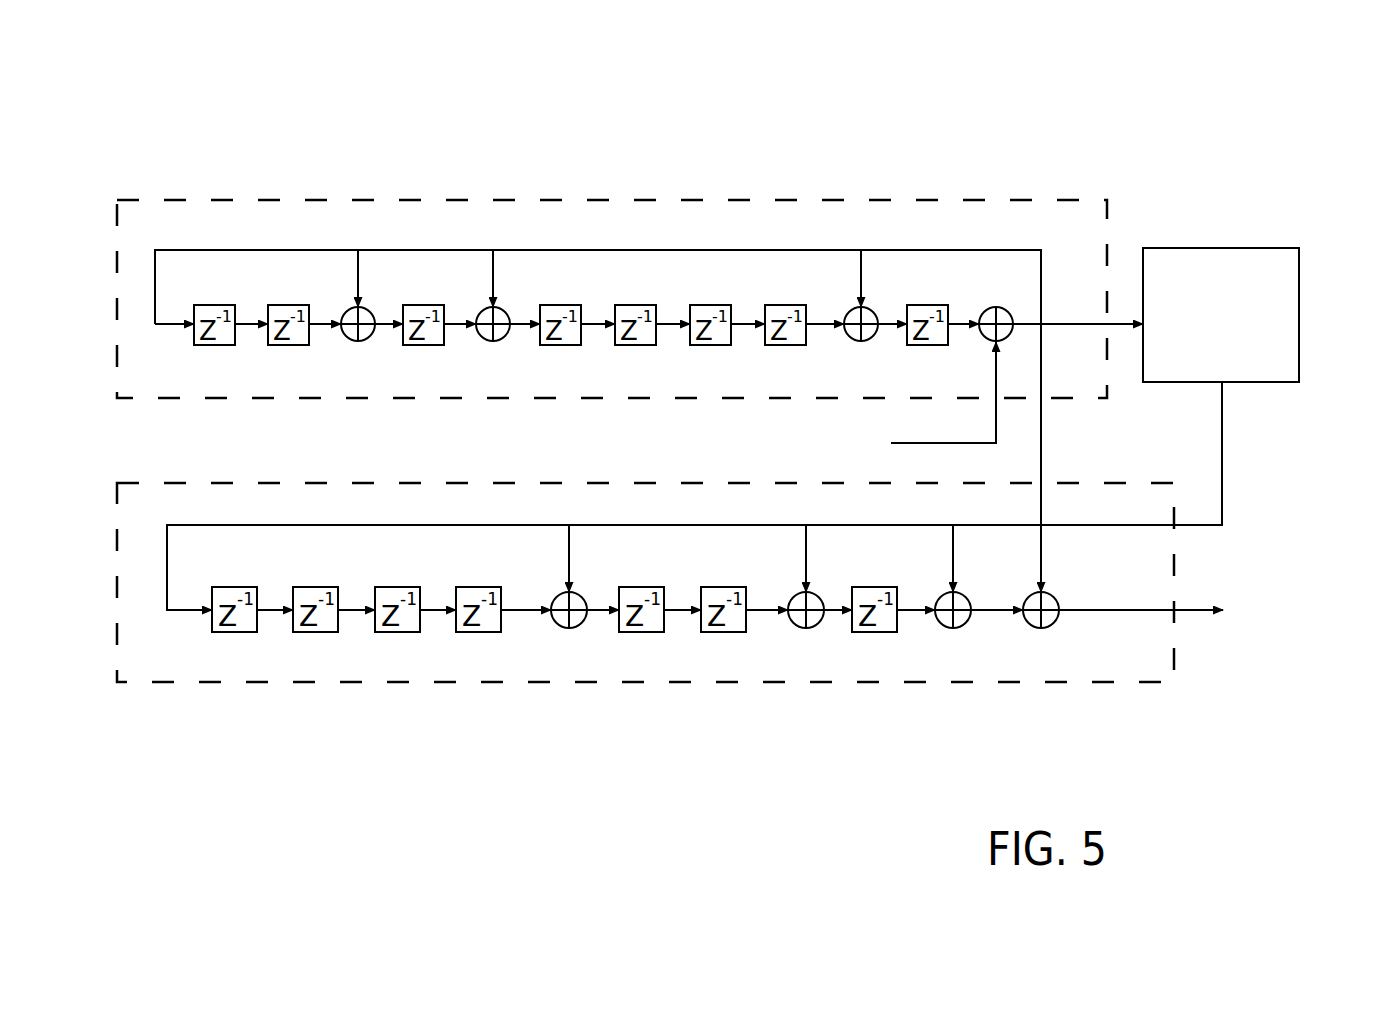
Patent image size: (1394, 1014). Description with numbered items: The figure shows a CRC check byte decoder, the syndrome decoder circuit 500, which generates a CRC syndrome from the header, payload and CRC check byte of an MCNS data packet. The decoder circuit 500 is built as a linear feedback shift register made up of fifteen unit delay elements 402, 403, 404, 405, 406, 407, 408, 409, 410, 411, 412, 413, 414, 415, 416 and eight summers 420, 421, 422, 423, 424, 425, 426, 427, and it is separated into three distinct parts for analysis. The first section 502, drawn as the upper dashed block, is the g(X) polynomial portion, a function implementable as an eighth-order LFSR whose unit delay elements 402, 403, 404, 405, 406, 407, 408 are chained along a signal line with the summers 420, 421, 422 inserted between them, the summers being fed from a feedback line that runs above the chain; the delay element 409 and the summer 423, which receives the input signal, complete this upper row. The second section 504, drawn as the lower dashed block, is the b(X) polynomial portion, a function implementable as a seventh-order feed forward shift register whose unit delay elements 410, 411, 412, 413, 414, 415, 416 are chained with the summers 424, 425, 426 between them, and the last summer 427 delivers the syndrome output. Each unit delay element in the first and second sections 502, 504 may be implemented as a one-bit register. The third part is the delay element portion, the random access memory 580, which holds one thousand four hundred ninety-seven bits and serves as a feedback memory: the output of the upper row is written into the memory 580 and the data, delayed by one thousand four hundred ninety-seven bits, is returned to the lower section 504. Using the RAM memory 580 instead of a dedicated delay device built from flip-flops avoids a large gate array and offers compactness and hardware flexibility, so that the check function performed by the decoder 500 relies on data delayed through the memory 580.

The syndrome decoder circuit 500 is at (699, 74).
The first section 502 is at (784, 198).
The second section 504 is at (905, 683).
The random access memory 580 is at (1200, 248).
The unit delay element 402 is at (215, 346).
The unit delay element 403 is at (301, 305).
The unit delay element 404 is at (437, 305).
The unit delay element 405 is at (552, 305).
The unit delay element 406 is at (640, 346).
The unit delay element 407 is at (727, 305).
The unit delay element 408 is at (773, 305).
The unit delay element 409 is at (920, 305).
The unit delay element 410 is at (247, 587).
The unit delay element 411 is at (325, 632).
The unit delay element 412 is at (410, 587).
The unit delay element 413 is at (492, 632).
The unit delay element 414 is at (650, 587).
The unit delay element 415 is at (730, 587).
The unit delay element 416 is at (880, 587).
The summer 420 is at (355, 342).
The summer 421 is at (492, 342).
The summer 422 is at (848, 334).
The summer 423 is at (1004, 310).
The summer 424 is at (577, 627).
The summer 425 is at (812, 627).
The summer 426 is at (962, 626).
The summer 427 is at (1052, 598).